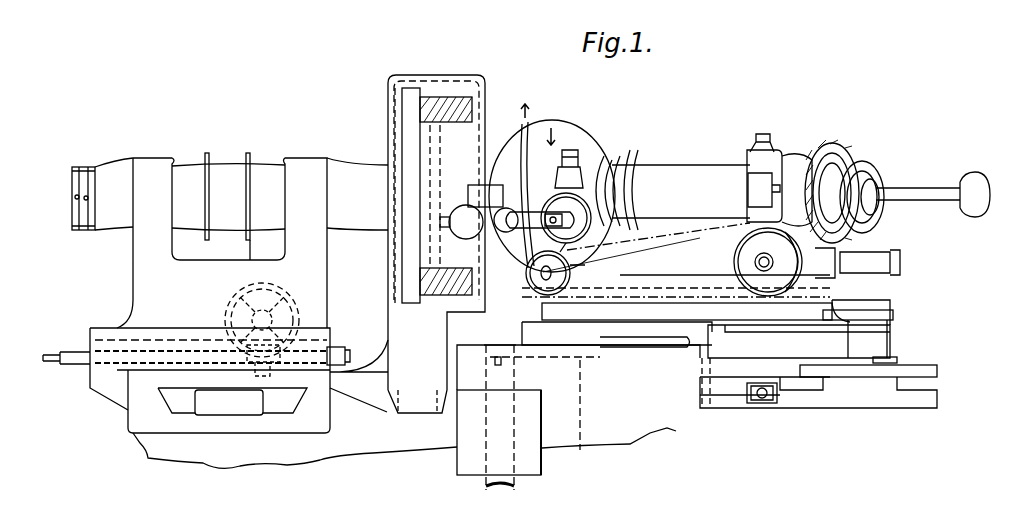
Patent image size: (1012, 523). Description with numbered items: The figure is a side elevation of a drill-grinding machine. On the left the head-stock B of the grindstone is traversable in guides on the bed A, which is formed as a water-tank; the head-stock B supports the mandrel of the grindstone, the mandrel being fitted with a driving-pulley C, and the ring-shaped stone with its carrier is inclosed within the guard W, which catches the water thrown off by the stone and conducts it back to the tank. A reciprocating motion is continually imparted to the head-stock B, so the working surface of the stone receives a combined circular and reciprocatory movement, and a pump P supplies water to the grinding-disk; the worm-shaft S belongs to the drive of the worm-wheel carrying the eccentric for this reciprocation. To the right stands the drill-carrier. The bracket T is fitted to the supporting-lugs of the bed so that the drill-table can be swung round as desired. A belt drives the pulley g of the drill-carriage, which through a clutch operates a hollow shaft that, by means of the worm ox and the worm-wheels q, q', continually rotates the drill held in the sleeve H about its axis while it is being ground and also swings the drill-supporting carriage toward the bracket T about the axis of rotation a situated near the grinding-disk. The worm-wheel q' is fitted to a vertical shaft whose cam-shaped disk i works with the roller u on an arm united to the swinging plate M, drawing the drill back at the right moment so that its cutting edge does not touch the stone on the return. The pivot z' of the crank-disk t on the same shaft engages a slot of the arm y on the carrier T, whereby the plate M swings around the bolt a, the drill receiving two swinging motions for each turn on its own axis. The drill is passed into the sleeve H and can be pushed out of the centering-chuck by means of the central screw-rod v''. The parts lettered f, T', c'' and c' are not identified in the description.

The bed A is at (359, 375).
The head-stock B is at (230, 243).
The driving-pulley C is at (228, 160).
The pump P is at (401, 96).
The worm-shaft S is at (437, 195).
The guard W is at (486, 80).
The bolt / axis of rotation a is at (520, 259).
The sleeve H is at (697, 180).
The centre line f is at (646, 247).
The swinging plate M is at (683, 308).
The pulley of the drill-carriage g is at (768, 262).
The worm-wheel q is at (844, 181).
The central screw-rod v'' is at (933, 190).
The worm ox is at (835, 265).
The worm-wheel q' is at (885, 257).
The roller u is at (838, 310).
The cam-shaped disk i is at (894, 325).
The pivot z' is at (892, 351).
The crank-disk t is at (930, 368).
The arm y is at (935, 400).
The bracket T is at (703, 401).
The table slide T' is at (578, 390).
The bracket block c'' is at (512, 432).
The rod c' is at (508, 423).